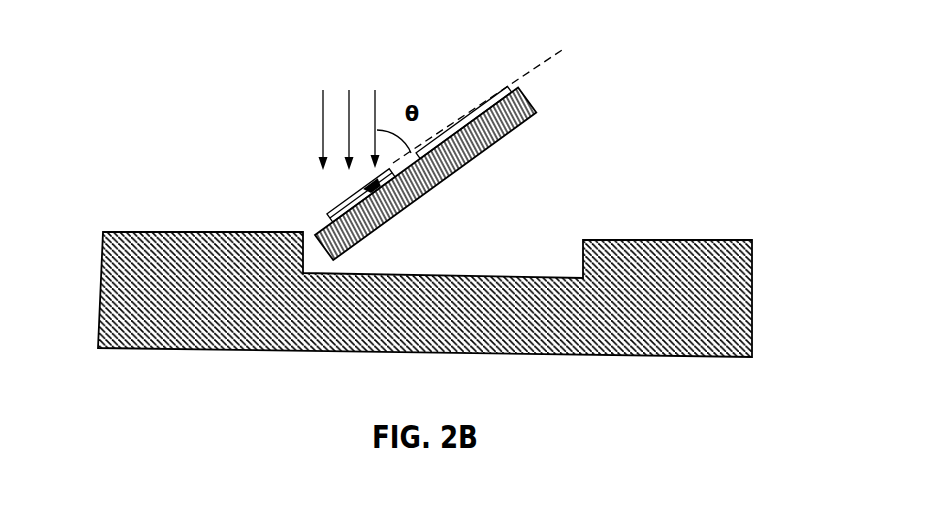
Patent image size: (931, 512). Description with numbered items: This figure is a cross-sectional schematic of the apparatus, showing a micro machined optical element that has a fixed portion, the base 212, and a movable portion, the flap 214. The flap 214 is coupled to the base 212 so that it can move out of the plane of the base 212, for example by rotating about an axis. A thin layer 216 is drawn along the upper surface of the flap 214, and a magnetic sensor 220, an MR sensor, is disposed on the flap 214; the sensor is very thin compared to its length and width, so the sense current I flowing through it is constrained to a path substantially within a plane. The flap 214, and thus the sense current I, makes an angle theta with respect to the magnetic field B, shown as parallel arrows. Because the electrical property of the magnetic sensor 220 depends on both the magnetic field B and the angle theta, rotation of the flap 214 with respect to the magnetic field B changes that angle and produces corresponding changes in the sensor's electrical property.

The base 212 is at (670, 238).
The flap 214 is at (523, 127).
The surface layer 216 is at (490, 110).
The magnetic sensor 220 is at (328, 215).
The magnetic field B is at (323, 143).
The sense current I is at (343, 198).